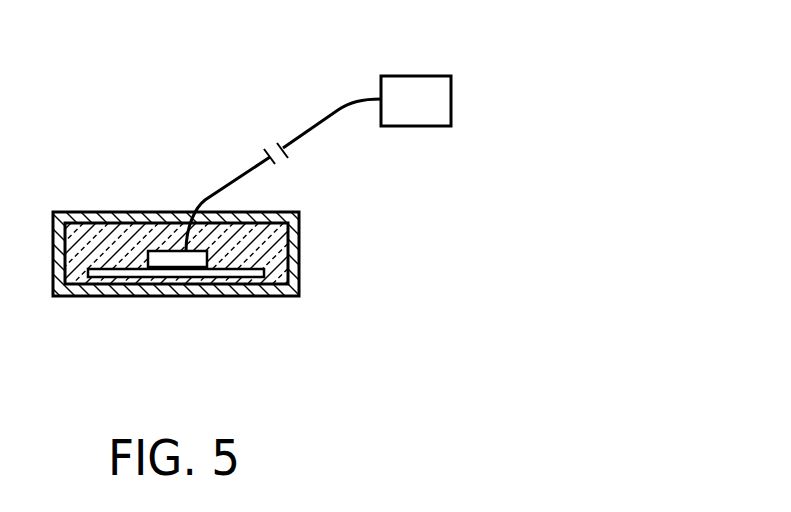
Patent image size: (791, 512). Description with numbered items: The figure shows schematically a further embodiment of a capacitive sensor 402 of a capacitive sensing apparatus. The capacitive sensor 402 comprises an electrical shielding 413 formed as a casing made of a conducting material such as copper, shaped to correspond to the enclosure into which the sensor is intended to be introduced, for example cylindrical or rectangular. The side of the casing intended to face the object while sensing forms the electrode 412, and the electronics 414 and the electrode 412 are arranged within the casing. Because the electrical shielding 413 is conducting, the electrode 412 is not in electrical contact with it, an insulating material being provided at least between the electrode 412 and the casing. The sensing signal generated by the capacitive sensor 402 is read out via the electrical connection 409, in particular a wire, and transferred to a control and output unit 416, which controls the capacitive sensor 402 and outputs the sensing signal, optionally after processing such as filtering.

The capacitive sensor 402 is at (364, 219).
The electrical connection 409 is at (243, 175).
The electrode 412 is at (117, 277).
The electrical shielding 413 is at (299, 274).
The electronics 414 is at (160, 256).
The control and output unit 416 is at (425, 76).